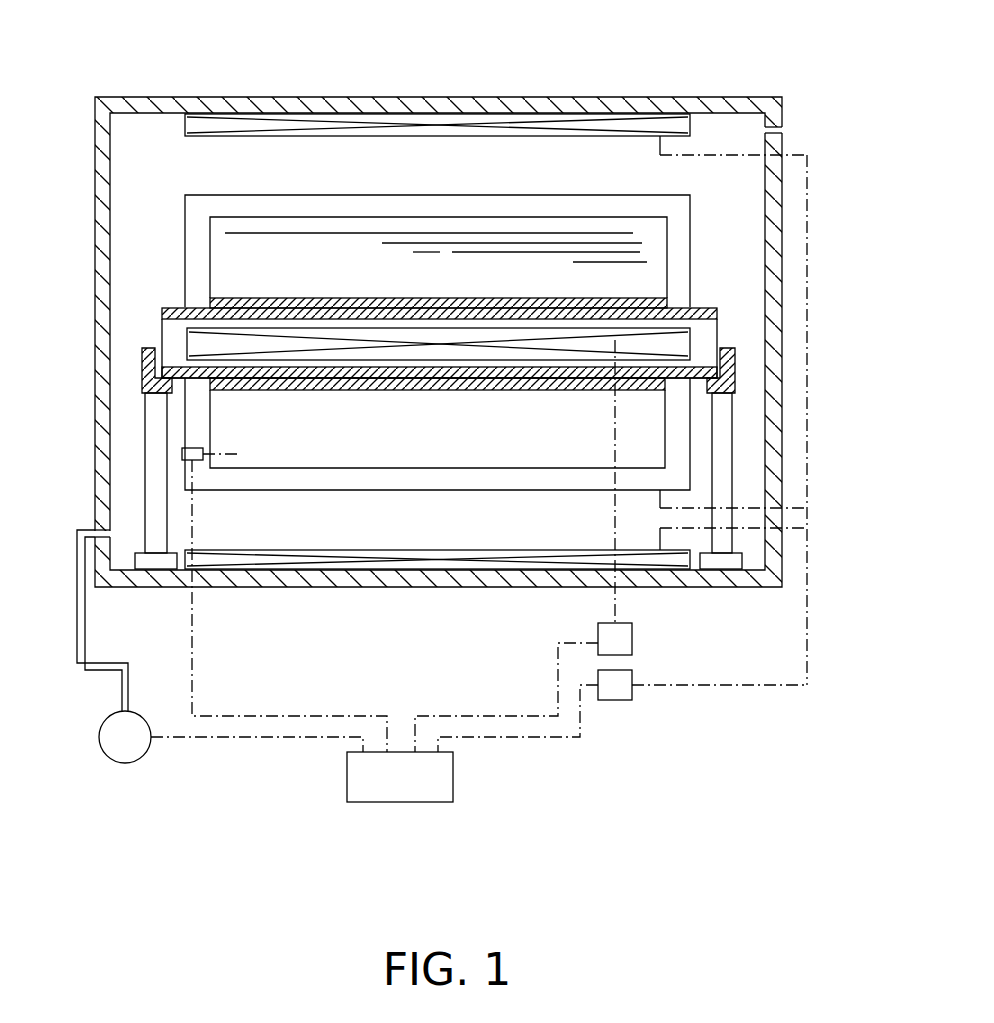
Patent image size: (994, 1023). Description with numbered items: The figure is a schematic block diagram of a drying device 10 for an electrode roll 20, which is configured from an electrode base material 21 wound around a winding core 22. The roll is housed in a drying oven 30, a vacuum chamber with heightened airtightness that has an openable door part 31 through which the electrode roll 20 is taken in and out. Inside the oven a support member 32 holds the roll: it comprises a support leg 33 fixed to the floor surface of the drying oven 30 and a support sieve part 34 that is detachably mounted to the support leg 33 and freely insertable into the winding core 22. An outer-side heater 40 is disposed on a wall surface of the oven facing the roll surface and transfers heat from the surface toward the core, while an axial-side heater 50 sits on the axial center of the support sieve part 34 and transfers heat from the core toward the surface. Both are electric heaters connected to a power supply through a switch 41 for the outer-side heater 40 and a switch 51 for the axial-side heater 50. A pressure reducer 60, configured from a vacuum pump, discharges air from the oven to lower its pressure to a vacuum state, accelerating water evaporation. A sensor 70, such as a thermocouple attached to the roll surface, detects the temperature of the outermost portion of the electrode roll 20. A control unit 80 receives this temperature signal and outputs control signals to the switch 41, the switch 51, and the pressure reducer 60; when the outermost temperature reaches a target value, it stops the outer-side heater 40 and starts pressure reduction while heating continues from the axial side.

The drying device 10 is at (127, 23).
The electrode roll 20 is at (466, 239).
The electrode base material 21 is at (660, 240).
The winding core 22 is at (660, 300).
The drying oven 30 is at (733, 105).
The door part 31 is at (786, 134).
The support member 32 is at (128, 353).
The support leg 33 is at (152, 445).
The support sieve part 34 is at (160, 314).
The outer-side heater 40 is at (520, 135).
The switch 41 is at (634, 690).
The axial-side heater 50 is at (641, 345).
The switch 51 is at (634, 632).
The pressure reducer 60 is at (127, 745).
The sensor 70 is at (192, 462).
The control unit 80 is at (395, 785).